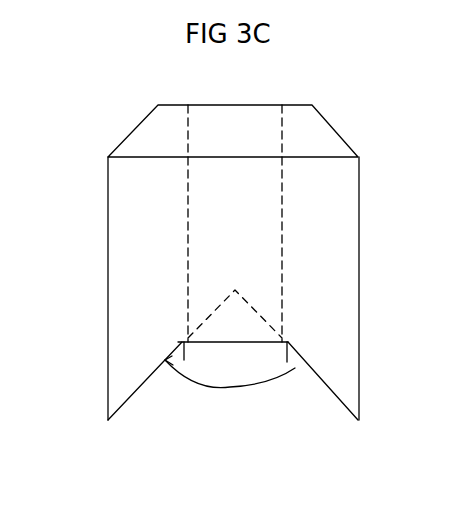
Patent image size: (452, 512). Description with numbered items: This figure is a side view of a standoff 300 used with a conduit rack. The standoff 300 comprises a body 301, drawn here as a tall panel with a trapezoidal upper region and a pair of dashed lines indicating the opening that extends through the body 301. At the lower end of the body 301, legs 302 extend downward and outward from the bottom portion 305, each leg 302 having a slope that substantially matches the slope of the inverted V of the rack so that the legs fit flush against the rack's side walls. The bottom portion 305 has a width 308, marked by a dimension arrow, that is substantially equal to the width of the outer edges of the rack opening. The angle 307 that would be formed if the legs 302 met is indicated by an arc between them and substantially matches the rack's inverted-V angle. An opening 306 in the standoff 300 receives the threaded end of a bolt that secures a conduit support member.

The standoff 300 is at (90, 227).
The body 301 is at (343, 238).
The legs 302 is at (140, 378).
The bottom portion 305 is at (250, 123).
The opening 306 is at (213, 340).
The angle 307 is at (243, 387).
The width 308 is at (286, 357).